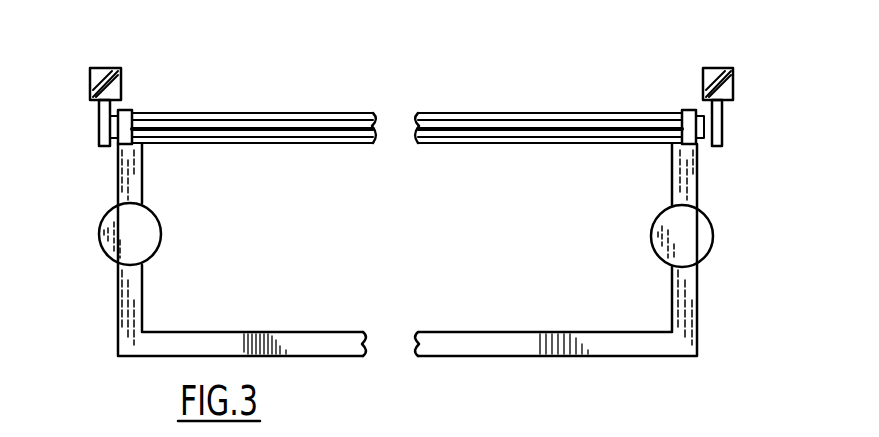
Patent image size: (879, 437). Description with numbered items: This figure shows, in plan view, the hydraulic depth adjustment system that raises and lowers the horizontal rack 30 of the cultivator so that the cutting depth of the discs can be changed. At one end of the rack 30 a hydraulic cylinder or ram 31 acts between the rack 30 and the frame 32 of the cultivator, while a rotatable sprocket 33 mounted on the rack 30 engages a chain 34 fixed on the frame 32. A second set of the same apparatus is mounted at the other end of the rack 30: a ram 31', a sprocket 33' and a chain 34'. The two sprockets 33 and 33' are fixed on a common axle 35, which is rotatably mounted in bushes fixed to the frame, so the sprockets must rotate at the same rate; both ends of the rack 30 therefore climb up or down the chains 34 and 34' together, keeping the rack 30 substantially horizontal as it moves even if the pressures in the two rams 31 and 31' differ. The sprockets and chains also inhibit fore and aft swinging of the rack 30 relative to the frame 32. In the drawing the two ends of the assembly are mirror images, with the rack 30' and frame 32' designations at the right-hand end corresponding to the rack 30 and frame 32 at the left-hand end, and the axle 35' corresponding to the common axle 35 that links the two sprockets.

The rack 30 is at (242, 250).
The hydraulic cylinder or ram 31 is at (154, 210).
The frame 32 is at (146, 65).
The rotatable sprocket 33 is at (79, 159).
The chain 34 is at (86, 128).
The common axle 35 is at (254, 165).
The conduit pipe (mirror) 30' is at (556, 250).
The ram 31' is at (655, 211).
The control unit (mirror) 32' is at (675, 65).
The sprocket 33' is at (759, 159).
The chain 34' is at (752, 128).
The heat exchange tube (mirror) 35' is at (548, 128).